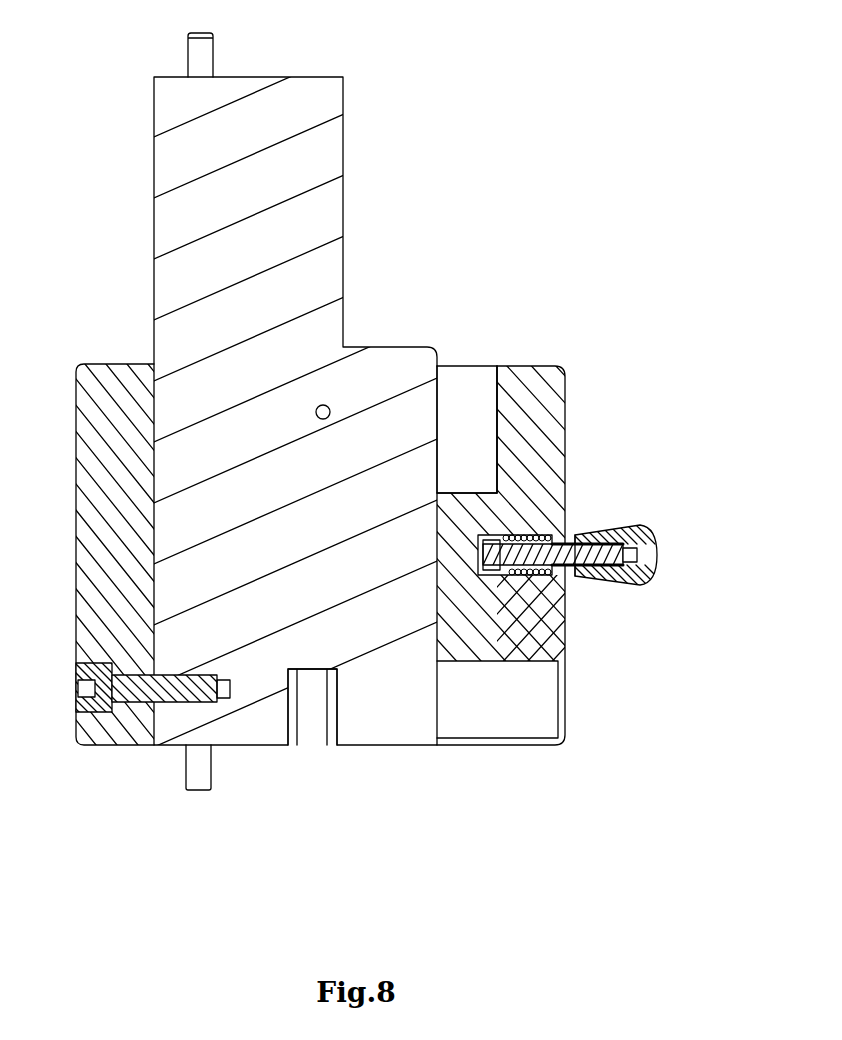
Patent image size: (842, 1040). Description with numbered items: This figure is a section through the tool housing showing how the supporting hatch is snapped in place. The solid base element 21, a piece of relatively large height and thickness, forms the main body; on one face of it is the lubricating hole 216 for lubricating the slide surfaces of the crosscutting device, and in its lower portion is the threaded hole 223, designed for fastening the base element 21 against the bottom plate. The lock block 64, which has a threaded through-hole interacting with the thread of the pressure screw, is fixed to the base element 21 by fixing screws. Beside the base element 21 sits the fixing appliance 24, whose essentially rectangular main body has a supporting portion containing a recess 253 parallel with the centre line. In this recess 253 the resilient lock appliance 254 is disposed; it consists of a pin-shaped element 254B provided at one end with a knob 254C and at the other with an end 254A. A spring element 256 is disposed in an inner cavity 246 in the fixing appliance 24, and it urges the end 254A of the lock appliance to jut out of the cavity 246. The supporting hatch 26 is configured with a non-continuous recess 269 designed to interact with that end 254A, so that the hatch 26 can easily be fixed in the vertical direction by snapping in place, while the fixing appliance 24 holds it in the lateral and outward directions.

The base element 21 is at (320, 223).
The lubricating hole 216 is at (330, 406).
The threaded hole 223 is at (310, 745).
The lock block 64 is at (88, 403).
The fixing appliance 24 is at (523, 352).
The supporting hatch 26 is at (447, 490).
The non-continuous recess 269 is at (483, 490).
The inner cavity 246 is at (488, 537).
The recess 253 is at (540, 545).
The lock appliance 254 is at (655, 558).
The end of lock appliance 254A is at (500, 590).
The pin-shaped element 254B is at (570, 582).
The knob 254C is at (615, 527).
The spring element 256 is at (560, 536).